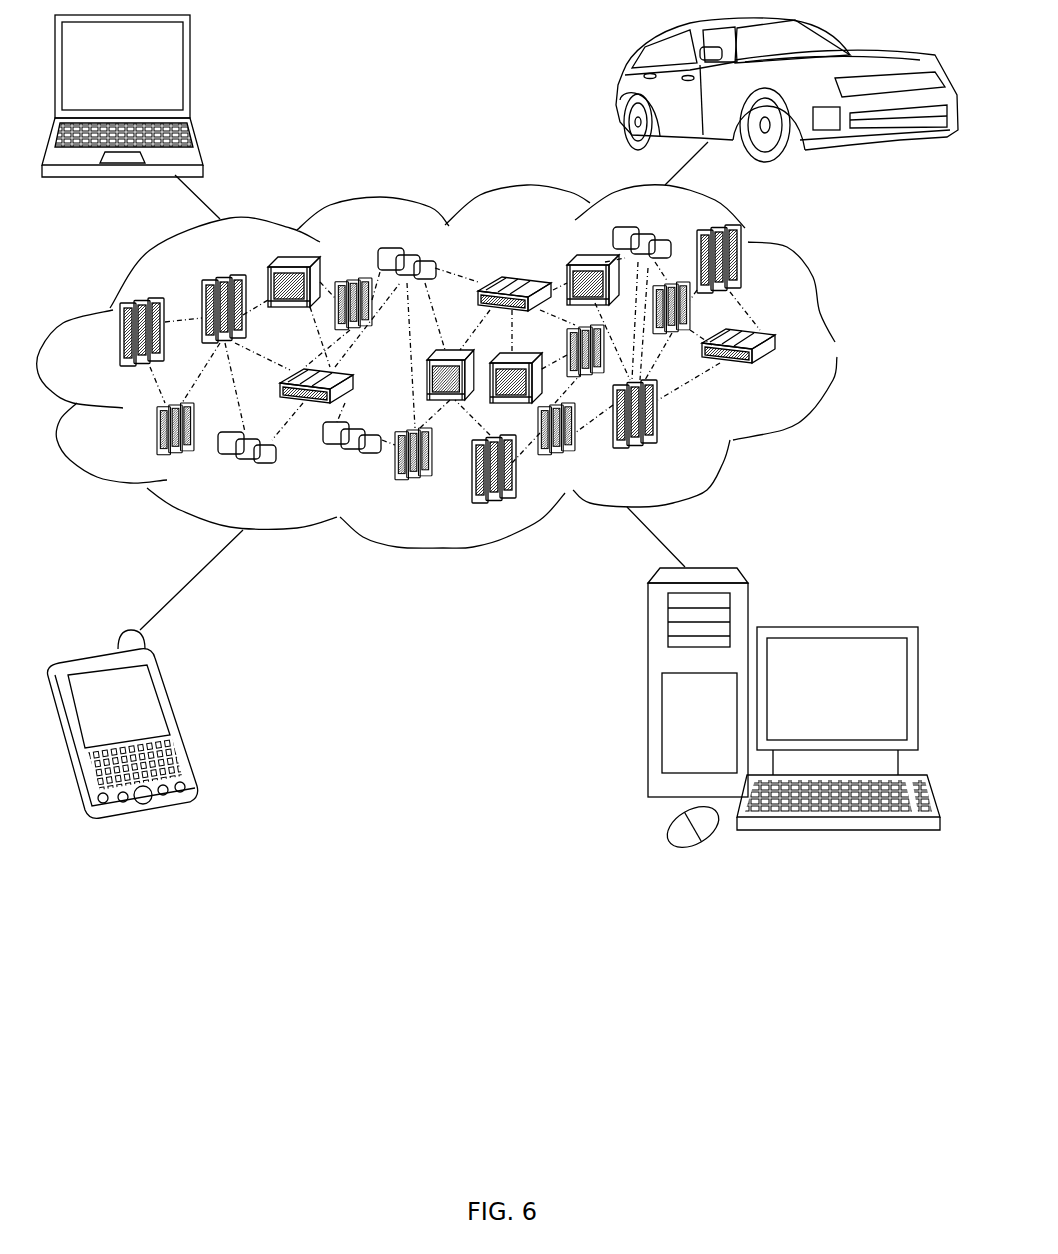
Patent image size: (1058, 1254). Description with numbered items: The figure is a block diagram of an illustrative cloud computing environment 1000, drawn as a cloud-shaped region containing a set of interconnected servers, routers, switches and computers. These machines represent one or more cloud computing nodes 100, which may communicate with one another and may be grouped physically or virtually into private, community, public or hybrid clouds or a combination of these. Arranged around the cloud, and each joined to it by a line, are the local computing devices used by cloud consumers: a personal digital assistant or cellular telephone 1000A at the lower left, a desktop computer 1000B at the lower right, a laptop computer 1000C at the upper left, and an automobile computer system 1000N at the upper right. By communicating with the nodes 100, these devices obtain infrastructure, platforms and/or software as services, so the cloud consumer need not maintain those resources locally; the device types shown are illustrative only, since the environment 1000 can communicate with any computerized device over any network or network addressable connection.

The cloud computing environment 1000 is at (835, 342).
The cloud computing nodes 100 is at (776, 371).
The personal digital assistant or cellular telephone 1000A is at (183, 722).
The desktop computer 1000B is at (845, 603).
The laptop computer 1000C is at (190, 78).
The automobile computer system 1000N is at (620, 92).